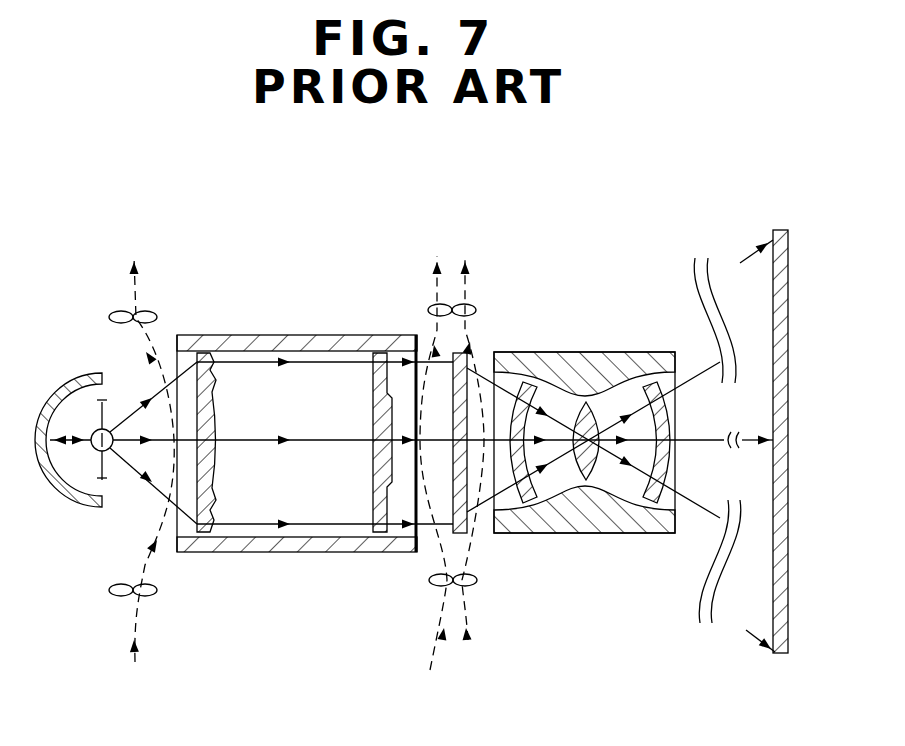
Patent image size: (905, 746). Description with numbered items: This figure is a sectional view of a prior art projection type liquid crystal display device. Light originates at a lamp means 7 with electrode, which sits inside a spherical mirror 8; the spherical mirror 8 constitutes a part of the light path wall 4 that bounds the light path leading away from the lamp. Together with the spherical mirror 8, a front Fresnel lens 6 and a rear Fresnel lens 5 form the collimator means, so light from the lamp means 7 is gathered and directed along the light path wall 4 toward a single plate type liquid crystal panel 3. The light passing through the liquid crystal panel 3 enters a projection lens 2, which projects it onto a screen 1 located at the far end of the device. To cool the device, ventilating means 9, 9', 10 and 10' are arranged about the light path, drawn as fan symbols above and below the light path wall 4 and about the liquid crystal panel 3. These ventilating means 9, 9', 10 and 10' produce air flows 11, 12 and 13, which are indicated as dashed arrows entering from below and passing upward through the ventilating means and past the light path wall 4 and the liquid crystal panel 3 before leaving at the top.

The screen 1 is at (781, 655).
The projection lens 2 is at (584, 534).
The single plate type liquid crystal panel 3 is at (470, 534).
The light path wall 4 is at (285, 336).
The rear Fresnel lens 5 is at (382, 535).
The front Fresnel lens 6 is at (208, 536).
The lamp means 7 is at (91, 436).
The spherical mirror 8 is at (68, 499).
The ventilating means 9 is at (123, 617).
The ventilating means 9' is at (123, 275).
The ventilating means 10 is at (430, 608).
The ventilating means 10' is at (412, 279).
The air flow 11 is at (468, 643).
The air flow 12 is at (430, 672).
The air flow 13 is at (135, 662).